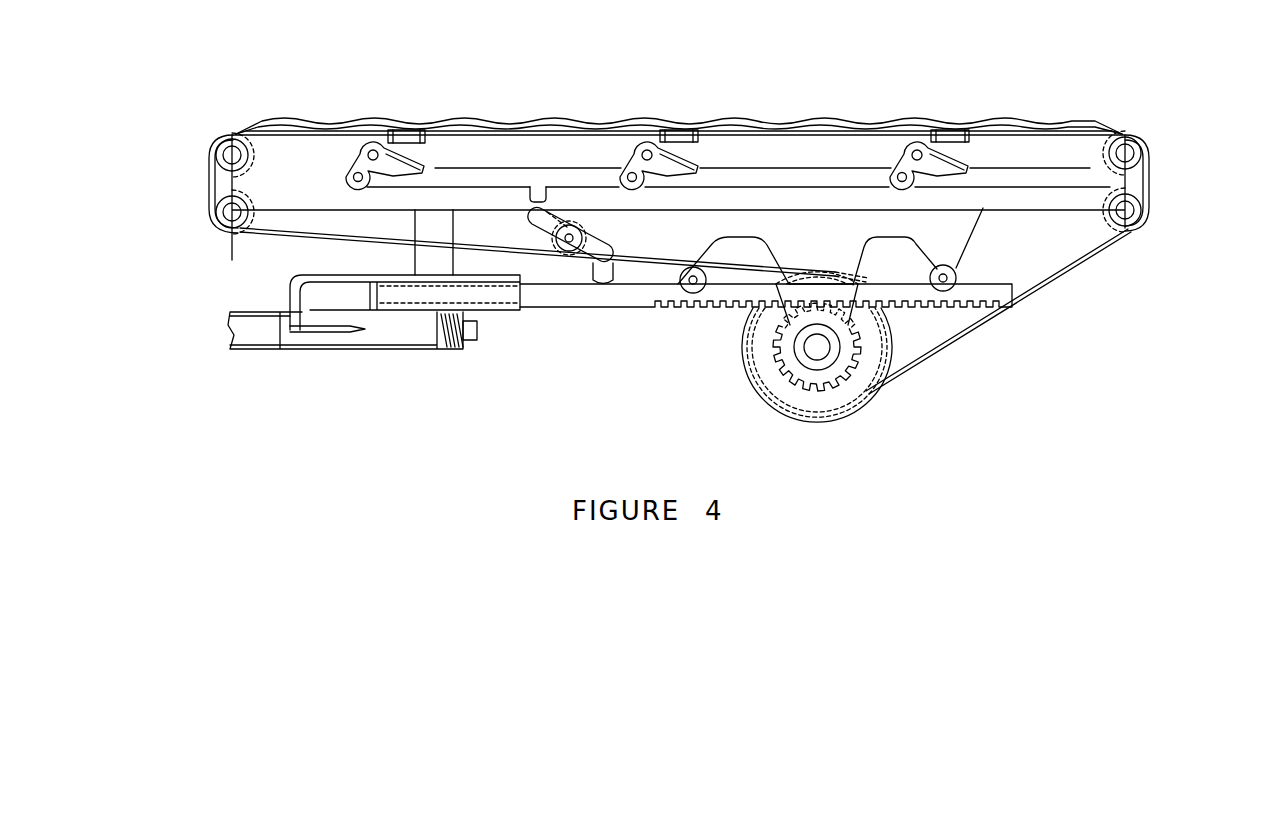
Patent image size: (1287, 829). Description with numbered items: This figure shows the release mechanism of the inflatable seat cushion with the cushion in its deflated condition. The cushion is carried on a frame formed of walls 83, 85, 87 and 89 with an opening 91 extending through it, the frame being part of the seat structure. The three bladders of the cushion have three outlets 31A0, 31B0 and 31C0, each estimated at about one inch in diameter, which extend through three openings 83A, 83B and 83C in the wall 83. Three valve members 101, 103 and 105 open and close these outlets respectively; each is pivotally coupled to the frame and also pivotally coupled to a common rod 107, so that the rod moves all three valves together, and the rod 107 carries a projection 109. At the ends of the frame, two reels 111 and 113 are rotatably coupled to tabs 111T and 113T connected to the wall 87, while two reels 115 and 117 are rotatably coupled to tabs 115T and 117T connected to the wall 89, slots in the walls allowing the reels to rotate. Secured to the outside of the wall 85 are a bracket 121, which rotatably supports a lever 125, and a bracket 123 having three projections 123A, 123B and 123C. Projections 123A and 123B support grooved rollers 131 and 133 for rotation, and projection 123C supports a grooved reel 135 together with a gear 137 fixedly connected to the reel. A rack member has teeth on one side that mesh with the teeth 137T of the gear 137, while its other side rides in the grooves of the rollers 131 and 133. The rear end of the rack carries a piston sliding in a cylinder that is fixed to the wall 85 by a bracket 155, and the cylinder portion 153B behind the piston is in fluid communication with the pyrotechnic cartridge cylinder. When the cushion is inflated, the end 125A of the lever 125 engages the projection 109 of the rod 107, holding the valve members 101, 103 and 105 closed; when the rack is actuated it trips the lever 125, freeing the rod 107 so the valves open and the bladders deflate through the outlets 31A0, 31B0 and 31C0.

The wall 83 is at (998, 135).
The opening of wall 83 83A is at (347, 96).
The opening of wall 83 83B is at (622, 95).
The opening of wall 83 83C is at (898, 95).
The outlet of bladder 31A 31A0 is at (400, 132).
The outlet of bladder 31B 31B0 is at (677, 132).
The outlet of bladder 31C 31C0 is at (950, 137).
The valve member 101 is at (400, 168).
The valve member 103 is at (670, 167).
The valve member 105 is at (940, 167).
The rod 107 is at (851, 168).
The projection 109 is at (537, 192).
The opening 91 is at (755, 199).
The wall 89 is at (213, 182).
The wall 87 is at (1127, 178).
The reel 115 is at (177, 126).
The tab 115T is at (233, 133).
The reel 117 is at (209, 233).
The tab 117T is at (248, 260).
The reel 111 is at (1175, 127).
The tab 111T is at (1140, 131).
The reel 113 is at (1182, 223).
The tab 113T is at (1127, 210).
The wall 85 is at (1060, 207).
The bracket 155 is at (415, 237).
The lever 125 is at (451, 313).
The end of lever 125 125A is at (590, 207).
The cylinder portion 153B is at (340, 293).
The bracket 121 is at (813, 314).
The bracket 123 is at (892, 315).
The projection 123A is at (690, 248).
The projection 123B is at (1002, 305).
The projection 123C is at (820, 238).
The grooved roller 131 is at (723, 335).
The grooved roller 133 is at (952, 290).
The grooved reel 135 is at (810, 400).
The gear 137 is at (875, 380).
The teeth of gear 137 137T is at (837, 383).